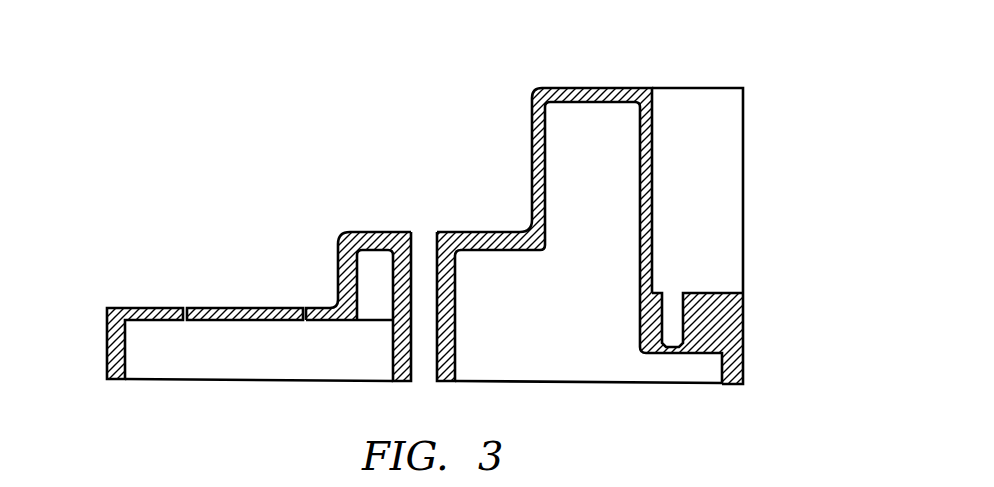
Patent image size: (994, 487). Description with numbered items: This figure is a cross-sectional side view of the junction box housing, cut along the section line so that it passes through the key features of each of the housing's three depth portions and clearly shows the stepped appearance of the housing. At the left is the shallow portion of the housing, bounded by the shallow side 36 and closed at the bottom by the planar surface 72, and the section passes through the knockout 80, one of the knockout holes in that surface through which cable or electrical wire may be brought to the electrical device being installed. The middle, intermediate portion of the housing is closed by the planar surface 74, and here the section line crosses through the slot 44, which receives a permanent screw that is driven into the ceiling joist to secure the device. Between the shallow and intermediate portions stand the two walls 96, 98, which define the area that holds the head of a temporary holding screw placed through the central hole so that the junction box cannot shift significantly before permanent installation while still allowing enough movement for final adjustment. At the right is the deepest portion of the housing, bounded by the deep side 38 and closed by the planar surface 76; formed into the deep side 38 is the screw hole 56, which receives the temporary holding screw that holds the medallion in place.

The shallow side 36 is at (107, 333).
The deep side 38 is at (743, 180).
The slot 44 is at (415, 230).
The screw hole 56 is at (672, 293).
The planar surface 72 is at (322, 306).
The planar surface 74 is at (473, 232).
The planar surface 76 is at (622, 87).
The knockout hole 80 is at (265, 306).
The wall 96 is at (393, 358).
The wall 98 is at (458, 308).